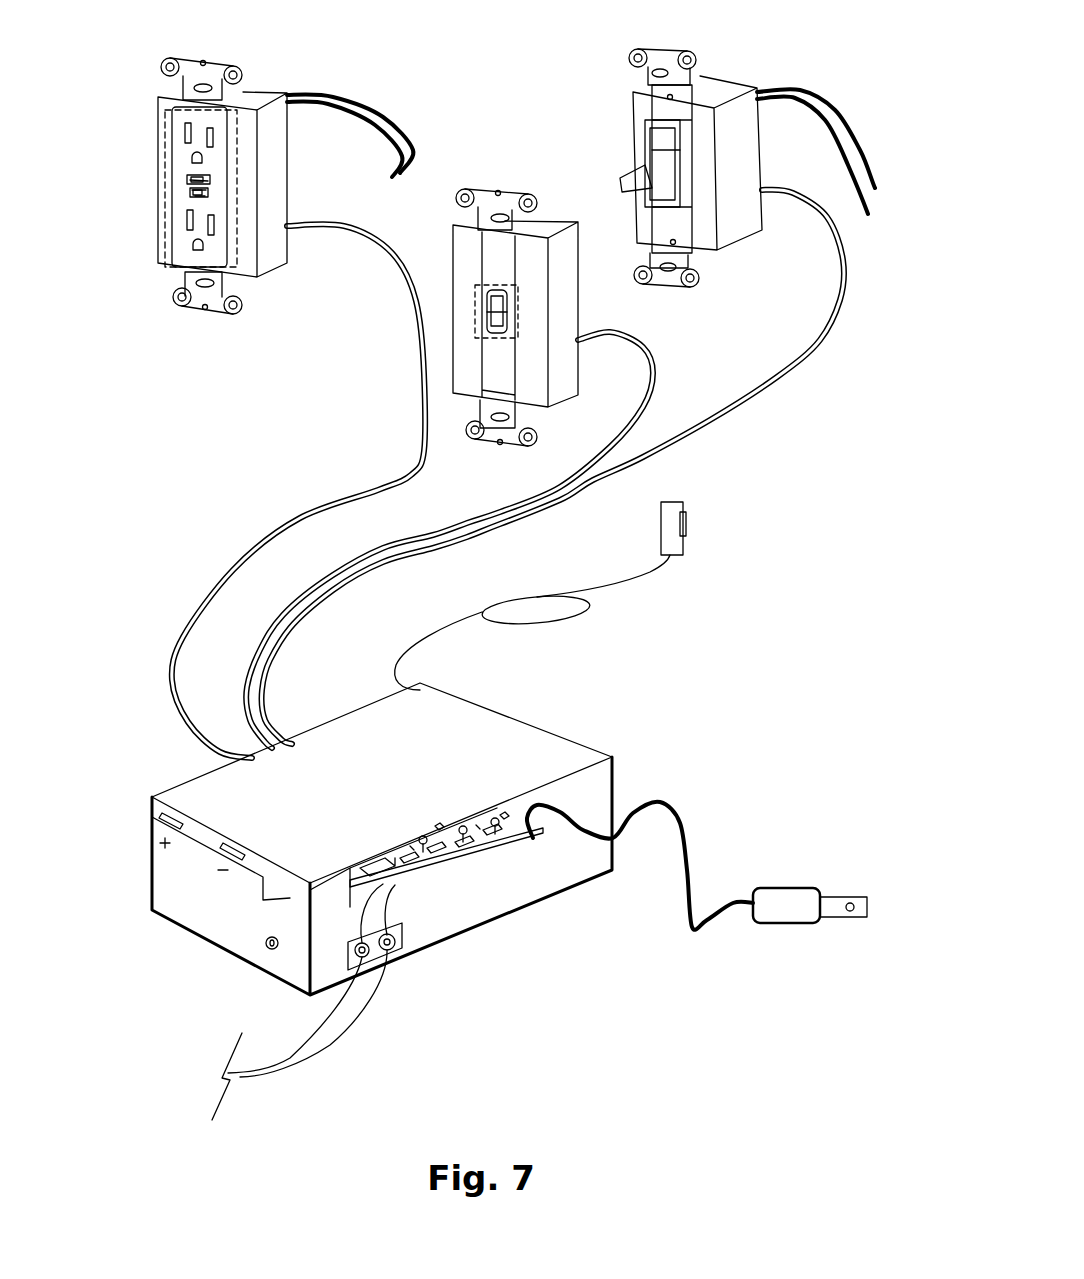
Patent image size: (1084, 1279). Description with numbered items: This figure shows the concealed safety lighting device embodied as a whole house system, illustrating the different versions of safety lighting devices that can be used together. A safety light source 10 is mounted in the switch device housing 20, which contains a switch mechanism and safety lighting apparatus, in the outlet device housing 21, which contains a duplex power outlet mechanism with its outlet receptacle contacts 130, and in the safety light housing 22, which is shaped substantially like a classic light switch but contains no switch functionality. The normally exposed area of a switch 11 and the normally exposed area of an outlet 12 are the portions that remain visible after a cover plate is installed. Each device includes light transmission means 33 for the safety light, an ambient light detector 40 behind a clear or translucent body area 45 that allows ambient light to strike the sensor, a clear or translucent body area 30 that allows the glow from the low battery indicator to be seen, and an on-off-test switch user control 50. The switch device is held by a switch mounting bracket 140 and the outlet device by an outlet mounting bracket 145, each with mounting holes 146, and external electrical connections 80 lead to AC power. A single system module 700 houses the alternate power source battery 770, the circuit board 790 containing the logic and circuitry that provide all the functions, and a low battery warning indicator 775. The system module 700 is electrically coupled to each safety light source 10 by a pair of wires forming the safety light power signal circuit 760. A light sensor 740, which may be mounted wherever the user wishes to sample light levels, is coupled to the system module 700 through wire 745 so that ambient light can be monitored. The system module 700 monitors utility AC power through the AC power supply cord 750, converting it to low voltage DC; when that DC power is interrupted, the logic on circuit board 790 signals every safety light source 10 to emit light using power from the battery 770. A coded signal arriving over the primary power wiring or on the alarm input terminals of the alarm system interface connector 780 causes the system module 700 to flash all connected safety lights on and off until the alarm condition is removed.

The safety light source 10 is at (190, 180).
The normally exposed area of a switch 11 is at (476, 341).
The normally exposed area of an outlet 12 is at (166, 265).
The switch device housing 20 is at (730, 222).
The outlet device housing 21 is at (273, 238).
The safety light housing 22 is at (560, 335).
The clear or translucent body area 30 is at (192, 196).
The light transmission means 33 is at (189, 177).
The ambient light detector 40 is at (210, 190).
The clear or translucent body area 45 is at (500, 303).
The on-off-test switch user control 50 is at (192, 192).
The external electrical connections 80 is at (355, 100).
The outlet receptacle contacts 130 is at (188, 133).
The switch mounting bracket 140 is at (675, 228).
The outlet mounting bracket 145 is at (217, 300).
The mounting holes 146 is at (207, 86).
The system module 700 is at (245, 790).
The light sensor 740 is at (687, 536).
The wire 745 is at (585, 612).
The AC power supply cord 750 is at (772, 903).
The safety light power signal circuit 760 is at (467, 520).
The alternate power source battery 770 is at (175, 893).
The low battery warning indicator 775 is at (266, 948).
The alarm system interface connector 780 is at (390, 953).
The circuit board 790 is at (472, 848).